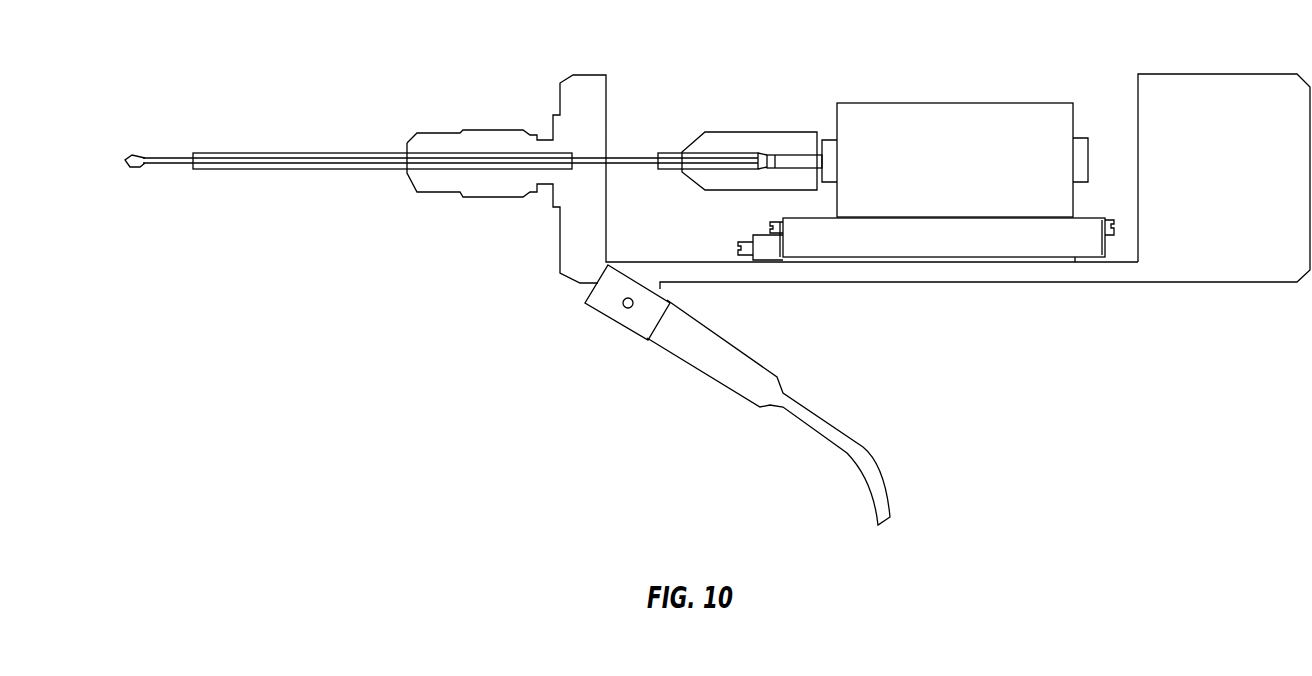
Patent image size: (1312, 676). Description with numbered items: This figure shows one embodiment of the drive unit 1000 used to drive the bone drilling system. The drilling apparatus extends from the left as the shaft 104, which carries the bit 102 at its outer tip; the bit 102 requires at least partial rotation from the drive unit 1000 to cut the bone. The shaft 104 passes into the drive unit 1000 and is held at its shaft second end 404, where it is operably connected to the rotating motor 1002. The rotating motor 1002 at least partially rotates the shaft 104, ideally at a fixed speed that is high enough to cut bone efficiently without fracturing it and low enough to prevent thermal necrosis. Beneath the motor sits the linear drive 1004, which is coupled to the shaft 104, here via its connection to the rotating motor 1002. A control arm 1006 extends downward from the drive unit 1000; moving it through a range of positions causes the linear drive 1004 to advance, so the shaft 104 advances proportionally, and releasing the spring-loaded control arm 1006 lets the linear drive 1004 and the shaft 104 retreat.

The drive unit 1000 is at (592, 72).
The shaft 104 is at (163, 148).
The bit 102 is at (140, 167).
The shaft second end 404 is at (720, 152).
The rotating motor 1002 is at (1043, 103).
The linear drive 1004 is at (968, 238).
The control arm 1006 is at (720, 383).